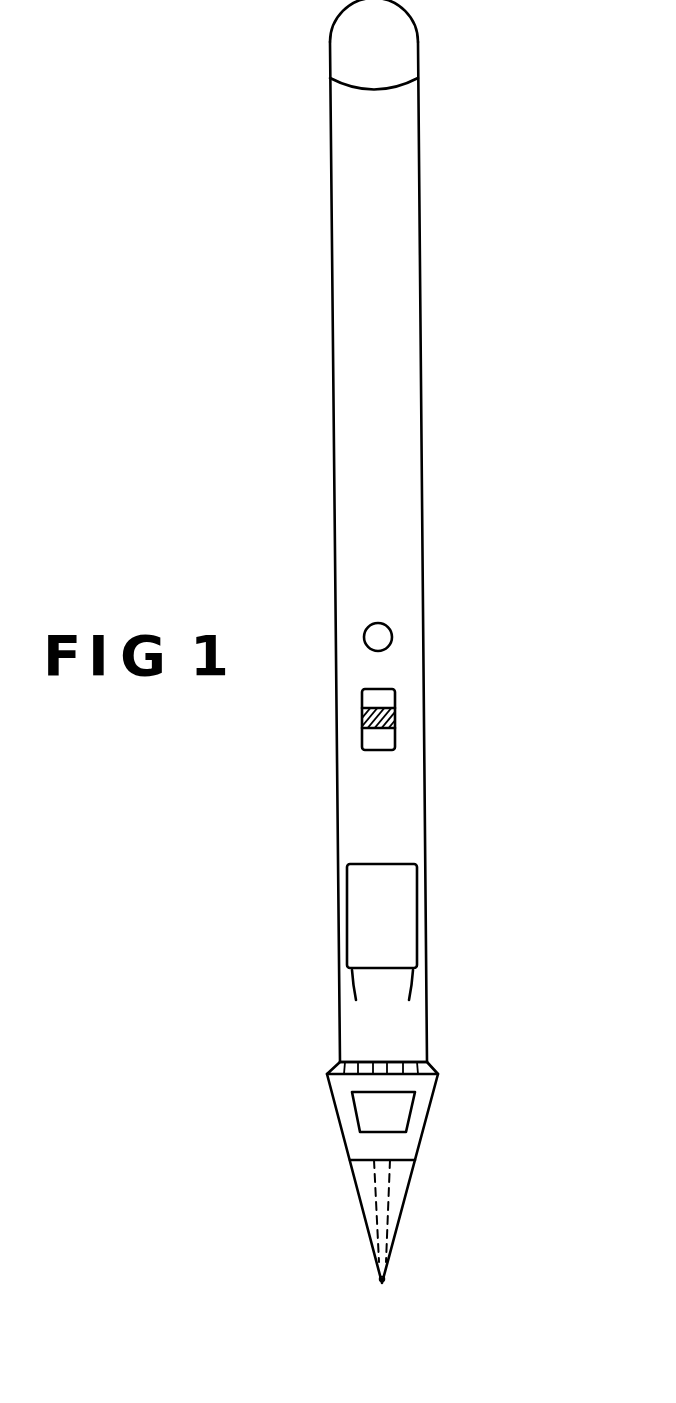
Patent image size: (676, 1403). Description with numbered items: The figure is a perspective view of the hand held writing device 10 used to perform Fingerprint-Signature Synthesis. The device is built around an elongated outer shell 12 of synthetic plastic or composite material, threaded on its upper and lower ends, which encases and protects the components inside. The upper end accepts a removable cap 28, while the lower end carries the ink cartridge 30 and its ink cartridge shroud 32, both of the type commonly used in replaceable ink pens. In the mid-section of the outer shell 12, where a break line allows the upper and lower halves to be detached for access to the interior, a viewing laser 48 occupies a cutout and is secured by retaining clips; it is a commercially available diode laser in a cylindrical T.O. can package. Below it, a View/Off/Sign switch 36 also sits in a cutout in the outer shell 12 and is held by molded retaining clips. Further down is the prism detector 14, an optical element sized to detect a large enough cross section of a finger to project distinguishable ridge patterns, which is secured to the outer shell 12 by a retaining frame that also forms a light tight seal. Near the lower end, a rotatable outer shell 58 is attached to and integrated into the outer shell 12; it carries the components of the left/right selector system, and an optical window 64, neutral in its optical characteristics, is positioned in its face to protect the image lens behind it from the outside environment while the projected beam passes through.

The hand held writing device 10 is at (464, 551).
The outer shell 12 is at (332, 300).
The prism detector 14 is at (408, 900).
The removable cap 28 is at (418, 43).
The ink cartridge 30 is at (390, 1190).
The ink cartridge shroud 32 is at (365, 1210).
The View/Off/Sign switch 36 is at (395, 698).
The viewing laser 48 is at (376, 622).
The rotatable outer shell 58 is at (336, 1108).
The optical window 64 is at (408, 1110).